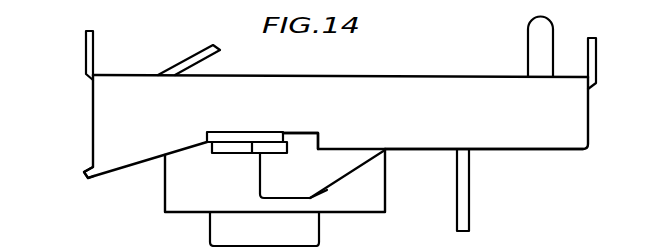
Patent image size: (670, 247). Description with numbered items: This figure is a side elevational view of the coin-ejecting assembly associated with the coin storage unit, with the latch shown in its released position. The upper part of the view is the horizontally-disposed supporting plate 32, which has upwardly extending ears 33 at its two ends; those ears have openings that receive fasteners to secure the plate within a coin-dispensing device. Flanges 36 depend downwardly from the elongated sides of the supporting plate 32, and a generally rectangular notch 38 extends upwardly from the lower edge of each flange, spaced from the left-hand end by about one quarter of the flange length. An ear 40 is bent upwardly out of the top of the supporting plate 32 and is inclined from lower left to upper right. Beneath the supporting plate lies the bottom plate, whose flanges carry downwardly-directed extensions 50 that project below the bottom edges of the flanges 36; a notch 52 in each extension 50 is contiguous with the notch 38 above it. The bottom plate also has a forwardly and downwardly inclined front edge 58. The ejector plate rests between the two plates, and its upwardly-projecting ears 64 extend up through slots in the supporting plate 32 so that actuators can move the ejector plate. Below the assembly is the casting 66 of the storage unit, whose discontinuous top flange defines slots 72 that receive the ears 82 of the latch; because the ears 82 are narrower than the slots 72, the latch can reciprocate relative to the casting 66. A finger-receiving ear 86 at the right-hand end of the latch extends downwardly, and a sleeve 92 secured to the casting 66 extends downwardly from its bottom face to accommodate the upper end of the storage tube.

The supporting plate 32 is at (472, 76).
The ears 33 is at (86, 48).
The flanges 36 is at (589, 136).
The notches 38 is at (323, 133).
The ear 40 is at (194, 54).
The extensions 50 is at (365, 173).
The notch 52 is at (286, 155).
The front edge 58 is at (84, 177).
The ears 64 is at (549, 28).
The casting 66 is at (165, 198).
The slots 72 is at (278, 131).
The ears 82 is at (227, 154).
The finger-receiving ear 86 is at (470, 208).
The sleeve 92 is at (320, 237).